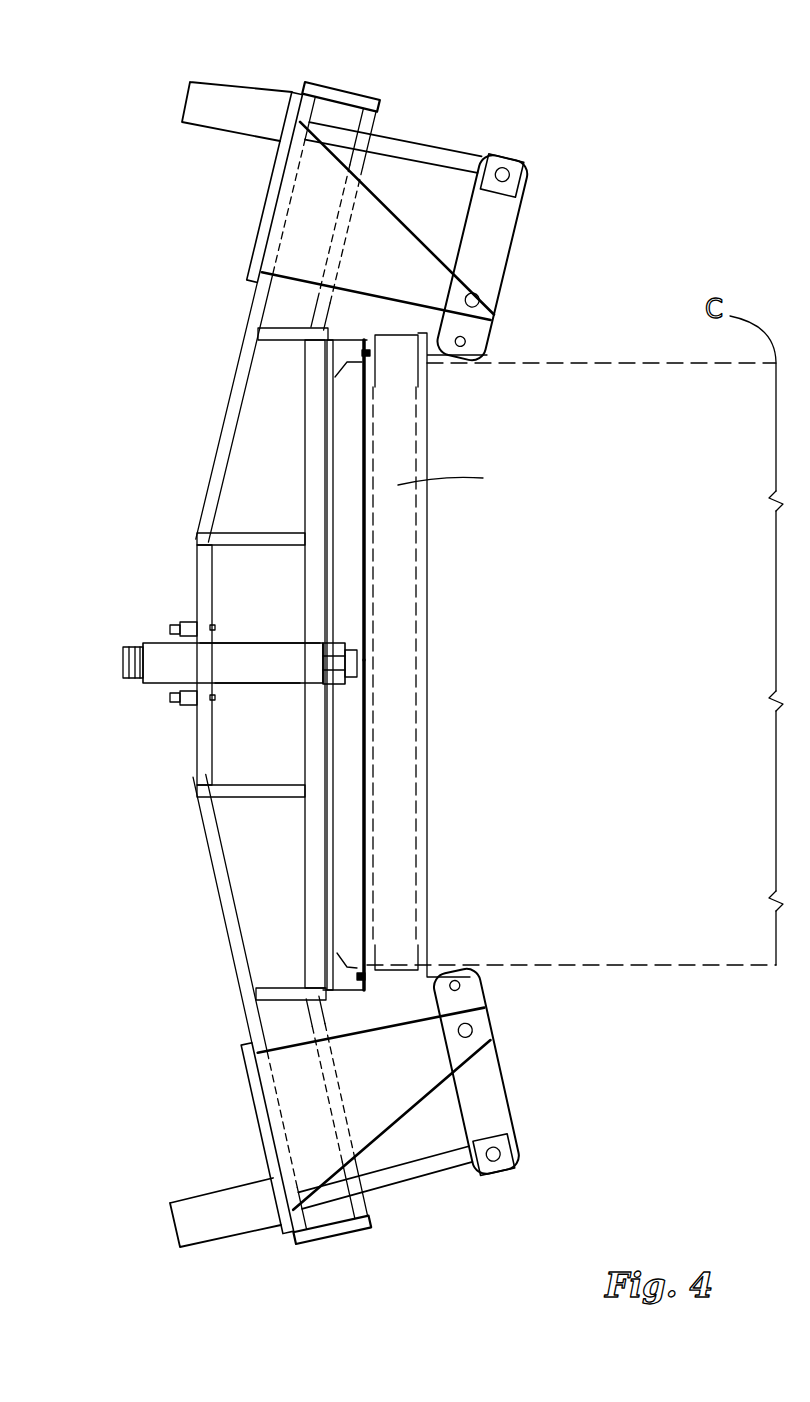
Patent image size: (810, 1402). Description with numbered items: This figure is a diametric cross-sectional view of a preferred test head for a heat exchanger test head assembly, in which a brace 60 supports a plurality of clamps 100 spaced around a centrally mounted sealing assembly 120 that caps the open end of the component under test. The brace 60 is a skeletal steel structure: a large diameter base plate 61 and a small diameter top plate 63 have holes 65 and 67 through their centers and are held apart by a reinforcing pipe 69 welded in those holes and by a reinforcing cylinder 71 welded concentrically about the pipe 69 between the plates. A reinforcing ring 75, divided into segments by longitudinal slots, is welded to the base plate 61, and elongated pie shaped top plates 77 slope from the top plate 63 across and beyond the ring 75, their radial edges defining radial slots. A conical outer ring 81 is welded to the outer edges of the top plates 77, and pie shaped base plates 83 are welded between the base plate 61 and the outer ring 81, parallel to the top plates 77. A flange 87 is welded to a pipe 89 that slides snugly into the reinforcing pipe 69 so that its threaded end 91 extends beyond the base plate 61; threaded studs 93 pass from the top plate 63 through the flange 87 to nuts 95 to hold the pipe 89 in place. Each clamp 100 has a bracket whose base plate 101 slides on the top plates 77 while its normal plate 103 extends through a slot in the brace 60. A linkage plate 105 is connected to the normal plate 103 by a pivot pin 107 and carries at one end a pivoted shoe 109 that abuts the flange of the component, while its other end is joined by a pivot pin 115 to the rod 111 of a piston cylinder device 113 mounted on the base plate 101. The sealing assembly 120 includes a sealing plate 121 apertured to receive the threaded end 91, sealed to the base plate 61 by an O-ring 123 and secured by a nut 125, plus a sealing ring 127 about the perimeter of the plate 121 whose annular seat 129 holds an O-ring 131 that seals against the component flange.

The brace 60 is at (203, 663).
The base plate 61 is at (310, 753).
The top plate 63 is at (205, 575).
The hole 65 is at (298, 637).
The hole 67 is at (243, 642).
The reinforcing pipe 69 is at (258, 688).
The reinforcing cylinder 71 is at (248, 543).
The reinforcing ring 75 is at (280, 335).
The pie shaped top plate 77 is at (223, 911).
The outer ring 81 is at (330, 1238).
The pie shaped base plate 83 is at (341, 97).
The flange 87 is at (180, 625).
The pipe 89 is at (165, 665).
The threaded end 91 is at (355, 647).
The threaded stud 93 is at (170, 628).
The nut 95 is at (172, 695).
The clamp 100 is at (308, 661).
The base plate 101 is at (275, 187).
The normal plate 103 is at (394, 224).
The linkage plate 105 is at (483, 257).
The pivot pin 107 is at (472, 300).
The shoe 109 is at (460, 341).
The rod 111 is at (393, 147).
The piston cylinder device 113 is at (235, 103).
The pivot pin 115 is at (502, 174).
The sealing assembly 120 is at (376, 681).
The sealing plate 121 is at (332, 855).
The O-ring 123 is at (332, 627).
The nut 125 is at (340, 688).
The sealing ring 127 is at (352, 965).
The annular seat 129 is at (334, 977).
The O-ring 131 is at (362, 975).